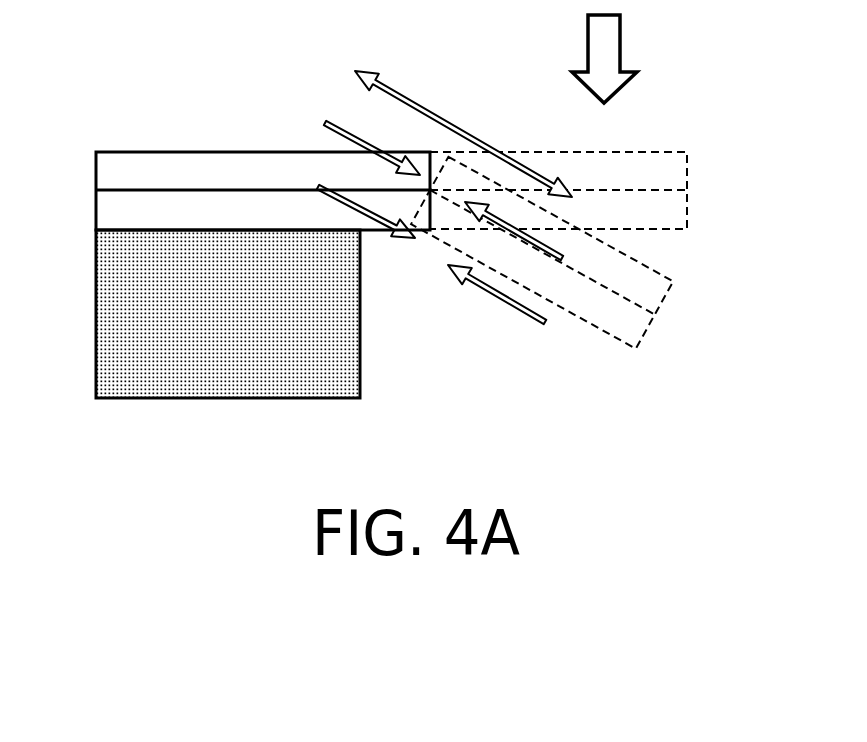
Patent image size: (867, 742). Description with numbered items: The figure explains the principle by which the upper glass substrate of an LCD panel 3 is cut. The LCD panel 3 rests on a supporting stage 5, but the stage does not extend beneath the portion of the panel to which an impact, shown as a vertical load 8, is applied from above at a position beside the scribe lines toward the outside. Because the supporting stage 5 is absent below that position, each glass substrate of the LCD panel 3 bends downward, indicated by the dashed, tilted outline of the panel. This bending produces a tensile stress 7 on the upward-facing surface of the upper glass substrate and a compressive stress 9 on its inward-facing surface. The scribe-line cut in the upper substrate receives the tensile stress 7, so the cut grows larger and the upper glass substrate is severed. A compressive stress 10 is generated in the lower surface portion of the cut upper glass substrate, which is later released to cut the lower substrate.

The LCD panel 3 is at (75, 155).
The supporting stage 5 is at (209, 382).
The tensile stress 7 is at (414, 101).
The vertical load 8 is at (612, 50).
The compressive stress 9 is at (547, 260).
The compressive stress 10 is at (512, 302).